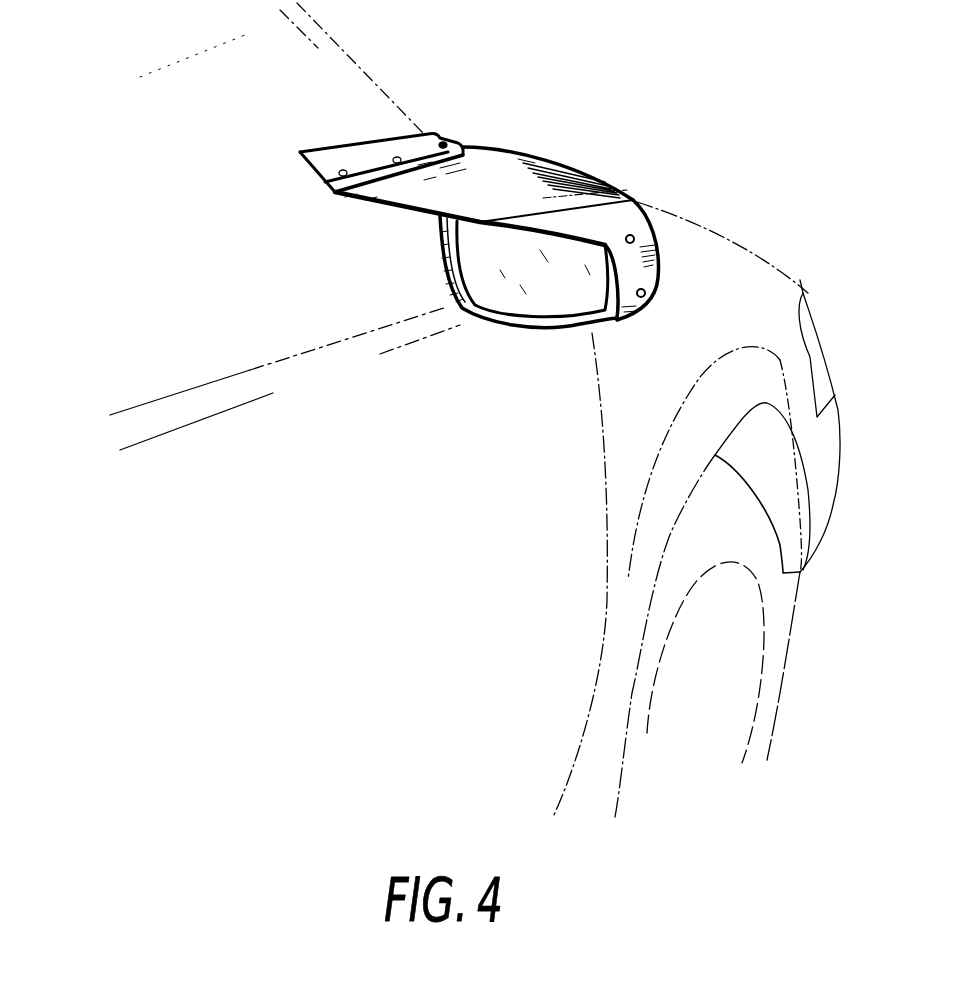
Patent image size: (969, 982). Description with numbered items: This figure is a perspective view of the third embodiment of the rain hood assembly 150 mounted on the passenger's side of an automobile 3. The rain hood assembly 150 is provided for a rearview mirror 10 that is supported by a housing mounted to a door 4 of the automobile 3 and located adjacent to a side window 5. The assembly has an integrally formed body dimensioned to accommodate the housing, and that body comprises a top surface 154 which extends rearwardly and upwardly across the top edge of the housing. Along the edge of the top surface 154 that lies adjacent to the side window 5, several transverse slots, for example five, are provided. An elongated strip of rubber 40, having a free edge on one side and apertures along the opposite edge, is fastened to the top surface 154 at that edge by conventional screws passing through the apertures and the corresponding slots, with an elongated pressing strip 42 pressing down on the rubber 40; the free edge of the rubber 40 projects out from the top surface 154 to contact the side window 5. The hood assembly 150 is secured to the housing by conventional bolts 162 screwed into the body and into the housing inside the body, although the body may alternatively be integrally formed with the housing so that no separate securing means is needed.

The automobile 3 is at (765, 249).
The door 4 is at (572, 718).
The side window 5 is at (313, 84).
The rearview mirror 10 is at (534, 300).
The elongated strip of rubber 40 is at (405, 136).
The elongated pressing strip 42 is at (432, 145).
The rain hood assembly 150 is at (520, 152).
The top surface 154 is at (548, 178).
The bolts 162 is at (637, 240).